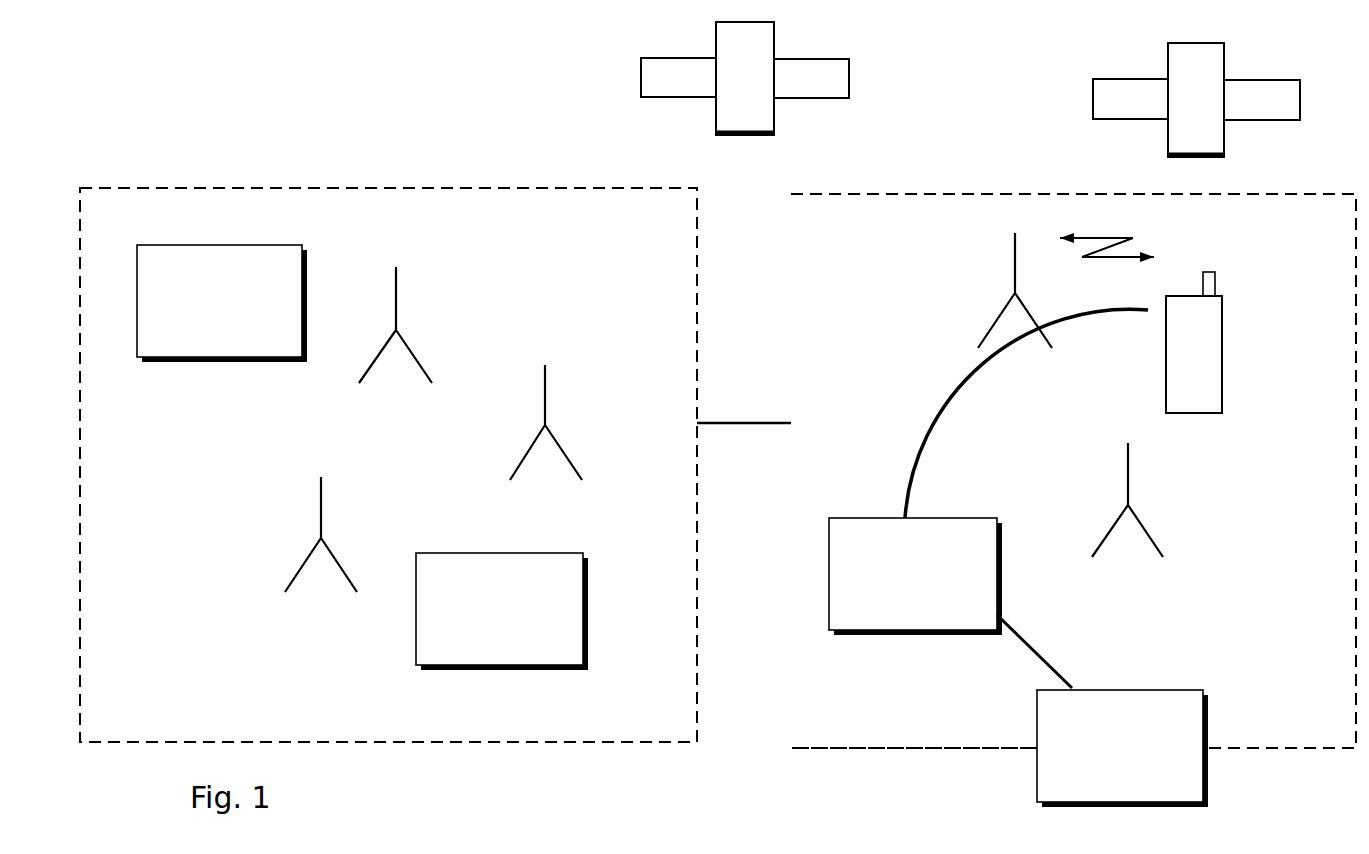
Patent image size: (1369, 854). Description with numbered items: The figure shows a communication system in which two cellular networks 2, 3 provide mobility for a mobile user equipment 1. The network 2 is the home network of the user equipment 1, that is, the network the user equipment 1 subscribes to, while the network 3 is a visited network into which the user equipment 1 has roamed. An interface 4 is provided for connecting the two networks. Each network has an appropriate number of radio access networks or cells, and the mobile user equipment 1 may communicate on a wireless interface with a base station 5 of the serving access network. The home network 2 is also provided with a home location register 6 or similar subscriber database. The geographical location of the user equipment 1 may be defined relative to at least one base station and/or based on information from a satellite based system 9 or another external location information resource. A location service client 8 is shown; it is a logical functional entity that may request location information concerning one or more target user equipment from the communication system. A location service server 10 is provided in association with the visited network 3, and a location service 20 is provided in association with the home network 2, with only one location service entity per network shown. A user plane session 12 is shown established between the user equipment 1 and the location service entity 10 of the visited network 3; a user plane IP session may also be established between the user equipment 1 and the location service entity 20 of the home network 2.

The mobile user equipment 1 is at (1213, 377).
The home network 2 is at (206, 691).
The visited network 3 is at (1284, 564).
The interface 4 is at (766, 416).
The base station 5 is at (1015, 266).
The home location register 6 is at (228, 331).
The location service client 8 is at (1120, 772).
The satellite based system 9 is at (1168, 56).
The location service server 10 is at (932, 601).
The user plane session 12 is at (948, 394).
The location service 20 is at (519, 637).